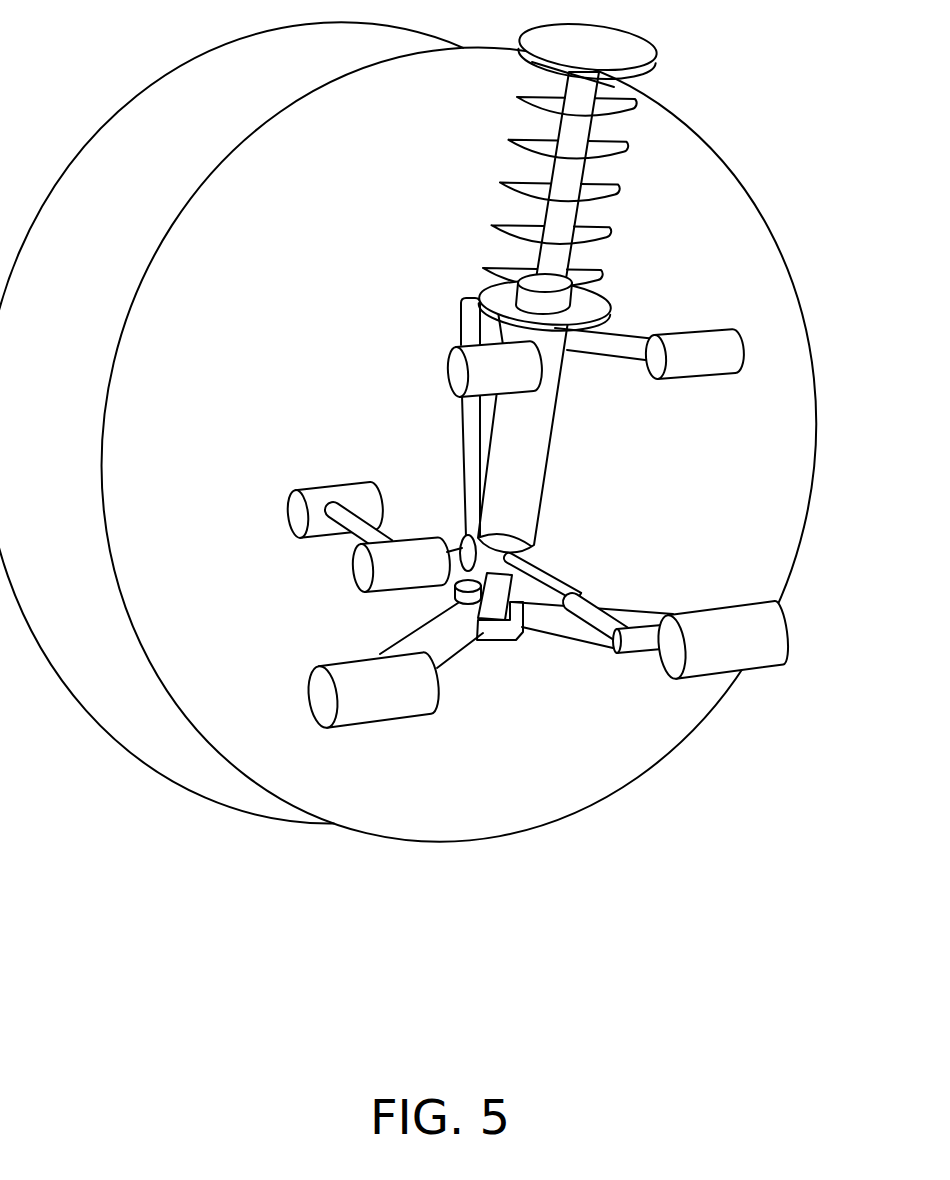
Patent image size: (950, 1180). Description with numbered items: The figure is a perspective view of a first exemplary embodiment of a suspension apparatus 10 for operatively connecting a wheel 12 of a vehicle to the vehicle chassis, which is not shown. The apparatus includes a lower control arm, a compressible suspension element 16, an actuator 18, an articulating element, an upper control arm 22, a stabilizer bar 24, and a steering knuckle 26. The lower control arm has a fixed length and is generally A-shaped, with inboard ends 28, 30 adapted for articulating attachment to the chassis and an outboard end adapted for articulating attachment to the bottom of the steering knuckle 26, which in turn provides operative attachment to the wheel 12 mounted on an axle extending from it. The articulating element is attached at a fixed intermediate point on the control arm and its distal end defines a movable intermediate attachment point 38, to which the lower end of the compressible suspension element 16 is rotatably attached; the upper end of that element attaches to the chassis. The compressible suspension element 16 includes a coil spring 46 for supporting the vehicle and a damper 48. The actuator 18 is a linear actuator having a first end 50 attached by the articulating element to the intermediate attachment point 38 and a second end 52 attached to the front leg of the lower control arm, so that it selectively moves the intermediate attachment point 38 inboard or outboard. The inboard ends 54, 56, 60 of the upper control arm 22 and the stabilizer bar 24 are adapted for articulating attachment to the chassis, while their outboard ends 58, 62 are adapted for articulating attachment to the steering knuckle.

The suspension apparatus 10 is at (358, 280).
The wheel 12 is at (198, 63).
The compressible suspension element 16 is at (496, 285).
The actuator 18 is at (620, 595).
The upper control arm 22 is at (479, 337).
The stabilizer bar 24 is at (342, 530).
The steering knuckle 26 is at (463, 455).
The inboard end 28 is at (787, 632).
The inboard end 30 is at (322, 700).
The movable intermediate attachment point 38 is at (532, 548).
The coil spring 46 is at (510, 189).
The damper 48 is at (547, 410).
The first end 50 is at (523, 560).
The second end 52 is at (612, 655).
The inboard end 54 is at (712, 366).
The inboard end 56 is at (455, 376).
The outboard end 58 is at (463, 297).
The inboard end 60 is at (362, 582).
The outboard end 62 is at (294, 518).